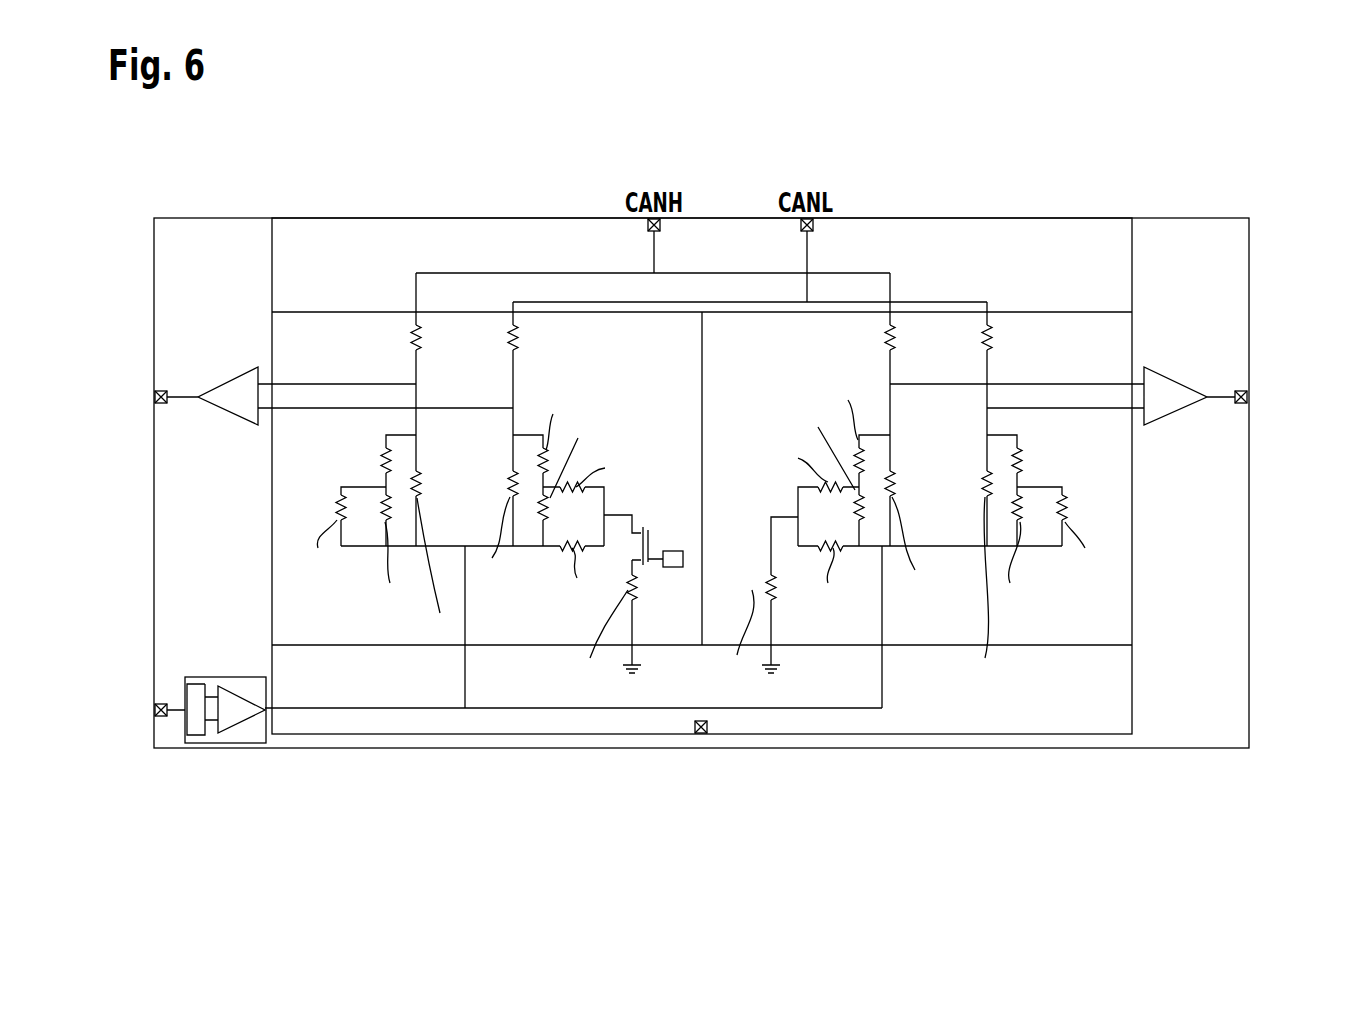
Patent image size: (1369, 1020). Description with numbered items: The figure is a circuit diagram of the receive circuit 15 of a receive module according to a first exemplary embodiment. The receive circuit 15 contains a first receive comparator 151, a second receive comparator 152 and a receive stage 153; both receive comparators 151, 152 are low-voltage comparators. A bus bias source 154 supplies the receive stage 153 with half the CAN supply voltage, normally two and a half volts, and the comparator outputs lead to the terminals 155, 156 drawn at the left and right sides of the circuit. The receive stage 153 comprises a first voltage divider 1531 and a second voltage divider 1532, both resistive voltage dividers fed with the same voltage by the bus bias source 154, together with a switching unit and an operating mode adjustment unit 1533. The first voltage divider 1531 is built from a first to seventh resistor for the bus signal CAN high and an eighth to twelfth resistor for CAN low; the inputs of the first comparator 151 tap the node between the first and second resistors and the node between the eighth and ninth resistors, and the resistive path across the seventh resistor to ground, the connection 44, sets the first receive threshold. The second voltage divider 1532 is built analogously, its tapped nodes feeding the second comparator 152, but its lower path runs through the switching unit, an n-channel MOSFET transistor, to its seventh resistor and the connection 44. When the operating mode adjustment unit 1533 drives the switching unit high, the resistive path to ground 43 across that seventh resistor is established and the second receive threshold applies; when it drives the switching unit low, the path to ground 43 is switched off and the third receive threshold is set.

The receive circuit 15 is at (1185, 218).
The first receive comparator 151 is at (1172, 365).
The second receive comparator 152 is at (243, 365).
The receive stage 153 is at (370, 748).
The bus bias source 154 is at (222, 677).
The output terminal of CA2 155 is at (154, 397).
The output terminal of CA1 156 is at (1249, 397).
The first voltage divider 1531 is at (1097, 628).
The second voltage divider 1532 is at (477, 490).
The operating mode adjustment unit 1533 is at (675, 568).
The ground 43 is at (154, 710).
The connection 44 is at (700, 735).